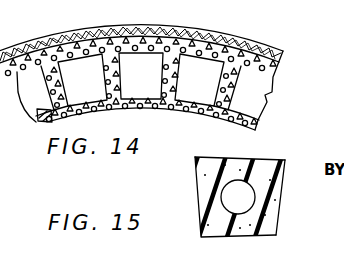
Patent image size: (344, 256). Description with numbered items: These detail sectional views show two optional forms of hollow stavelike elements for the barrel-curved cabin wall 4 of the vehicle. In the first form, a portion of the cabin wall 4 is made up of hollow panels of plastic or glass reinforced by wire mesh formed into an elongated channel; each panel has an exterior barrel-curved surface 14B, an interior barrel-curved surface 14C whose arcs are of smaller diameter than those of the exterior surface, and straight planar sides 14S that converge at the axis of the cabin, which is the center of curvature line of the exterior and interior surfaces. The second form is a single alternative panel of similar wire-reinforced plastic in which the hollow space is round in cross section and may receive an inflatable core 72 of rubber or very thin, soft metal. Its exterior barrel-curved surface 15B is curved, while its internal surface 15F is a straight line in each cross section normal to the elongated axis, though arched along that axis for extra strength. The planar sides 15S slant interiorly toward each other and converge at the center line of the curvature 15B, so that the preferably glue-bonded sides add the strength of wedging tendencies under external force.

In FIG. 14, the barrel-curved cabin wall 4 is at (218, 25).
In FIG. 14, the exterior barrel-curved surface 14B is at (284, 64).
In FIG. 14, the interior barrel-curved surface 14C is at (46, 126).
In FIG. 14, the planar sides 14S is at (119, 54).
In FIG. 15, the exterior barrel-curved surface 15B is at (245, 156).
In FIG. 15, the planar sides 15S is at (285, 184).
In FIG. 15, the internal surface 15F is at (252, 236).
In FIG. 15, the inflatable core 72 is at (247, 206).